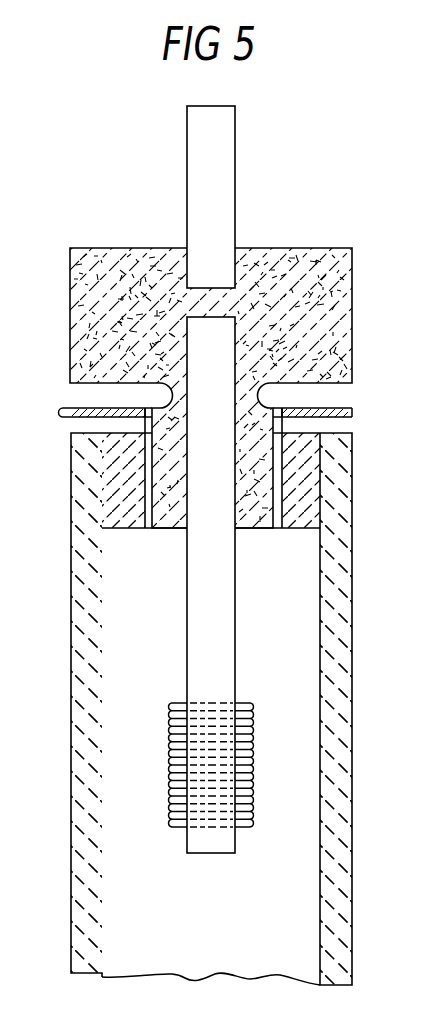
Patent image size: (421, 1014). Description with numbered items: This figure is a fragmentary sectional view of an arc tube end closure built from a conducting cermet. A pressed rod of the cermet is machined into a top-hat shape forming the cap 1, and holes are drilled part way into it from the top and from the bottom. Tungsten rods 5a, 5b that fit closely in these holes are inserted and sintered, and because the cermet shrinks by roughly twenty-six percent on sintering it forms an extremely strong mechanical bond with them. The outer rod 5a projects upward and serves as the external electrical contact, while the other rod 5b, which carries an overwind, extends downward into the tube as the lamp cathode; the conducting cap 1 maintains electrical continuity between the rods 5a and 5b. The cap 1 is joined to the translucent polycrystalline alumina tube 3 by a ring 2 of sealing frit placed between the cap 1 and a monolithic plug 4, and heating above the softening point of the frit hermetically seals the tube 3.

The cap 1 is at (316, 248).
The ring 2 is at (65, 411).
The translucent polycrystalline alumina tube 3 is at (76, 647).
The monolithic plug 4 is at (133, 530).
The outer rod 5a is at (236, 178).
The rod 5b is at (233, 622).